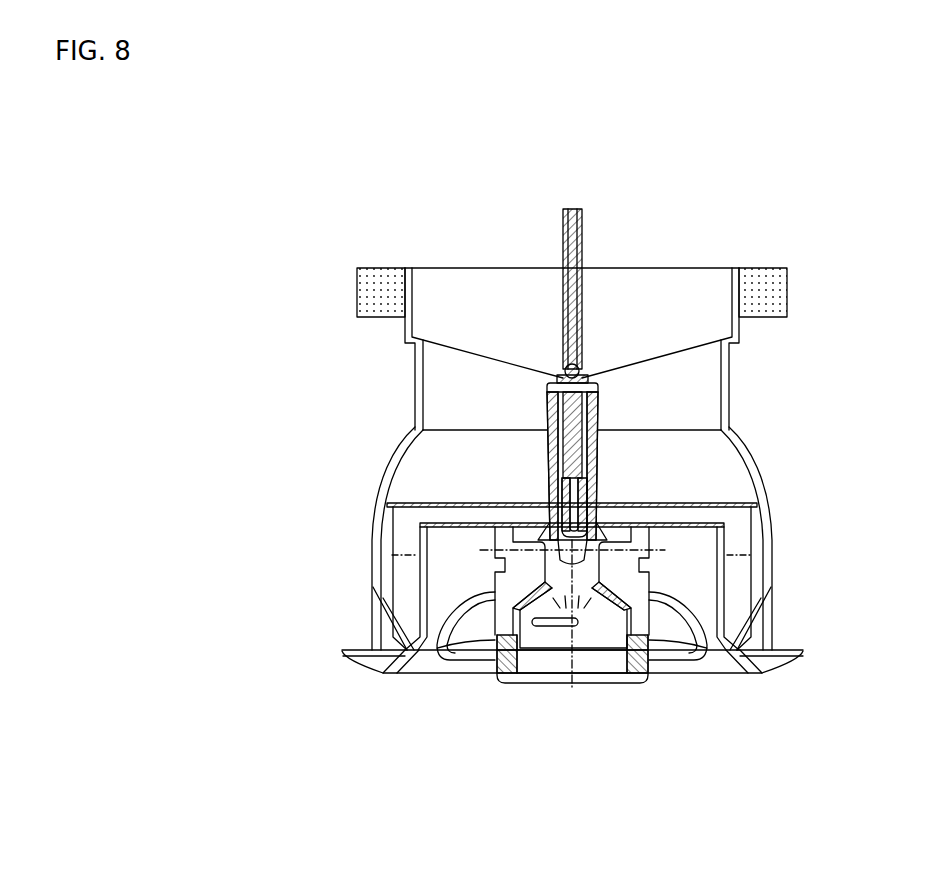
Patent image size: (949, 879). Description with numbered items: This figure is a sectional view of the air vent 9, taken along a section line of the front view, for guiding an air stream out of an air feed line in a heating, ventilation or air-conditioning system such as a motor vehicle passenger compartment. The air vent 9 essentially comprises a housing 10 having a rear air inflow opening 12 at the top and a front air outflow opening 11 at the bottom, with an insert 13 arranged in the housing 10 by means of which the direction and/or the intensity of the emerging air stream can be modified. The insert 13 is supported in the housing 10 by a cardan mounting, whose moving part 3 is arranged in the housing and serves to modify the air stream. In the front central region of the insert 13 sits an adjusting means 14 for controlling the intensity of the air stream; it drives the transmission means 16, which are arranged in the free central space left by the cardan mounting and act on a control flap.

The air vent 9 is at (316, 206).
The rear air inflow opening 12 is at (650, 226).
The housing 10 is at (755, 478).
The insert 13 is at (742, 583).
The transmission means 16 is at (572, 435).
The moving part 3 is at (637, 592).
The adjusting means 14 is at (537, 667).
The front air outflow opening 11 is at (745, 694).